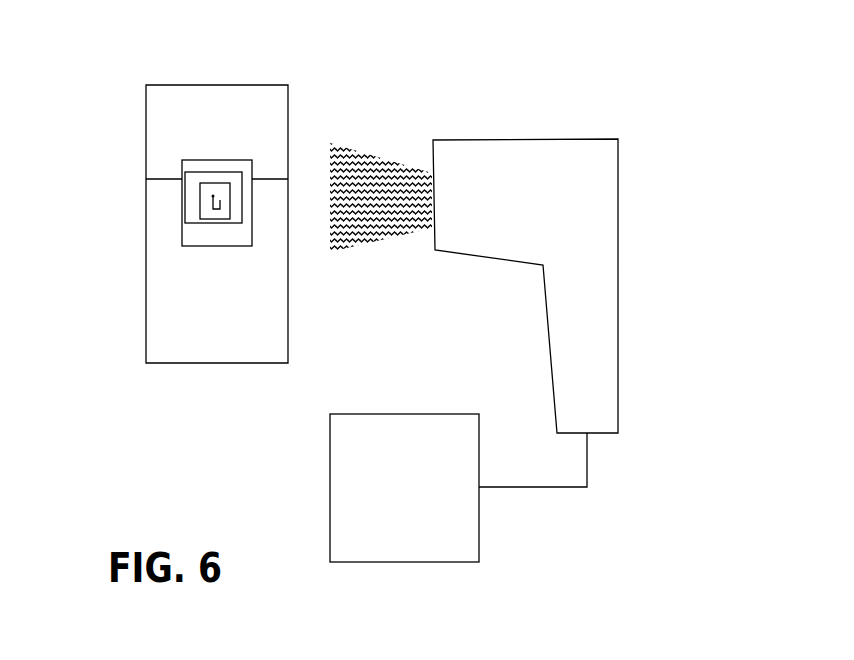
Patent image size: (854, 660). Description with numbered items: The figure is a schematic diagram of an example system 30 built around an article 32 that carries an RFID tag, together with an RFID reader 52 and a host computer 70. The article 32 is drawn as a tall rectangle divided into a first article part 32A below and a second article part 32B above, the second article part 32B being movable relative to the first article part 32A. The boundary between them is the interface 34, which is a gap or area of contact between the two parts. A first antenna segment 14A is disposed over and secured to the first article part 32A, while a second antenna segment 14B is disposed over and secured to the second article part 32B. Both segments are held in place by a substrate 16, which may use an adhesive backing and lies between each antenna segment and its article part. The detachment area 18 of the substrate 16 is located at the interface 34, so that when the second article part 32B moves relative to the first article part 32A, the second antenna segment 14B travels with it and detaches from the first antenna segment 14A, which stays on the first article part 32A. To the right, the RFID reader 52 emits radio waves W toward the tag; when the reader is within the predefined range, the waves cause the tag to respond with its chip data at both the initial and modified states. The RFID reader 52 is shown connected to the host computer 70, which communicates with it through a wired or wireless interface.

The system 30 is at (636, 43).
The article 32 is at (268, 66).
The first article part 32A is at (146, 296).
The second article part 32B is at (146, 104).
The interface 34 is at (157, 179).
The detachment area 18 is at (178, 186).
The substrate 16 is at (235, 248).
The second antenna segment 14B is at (197, 171).
The first antenna segment 14A is at (200, 203).
The radio waves W is at (363, 158).
The RFID reader 52 is at (620, 182).
The host computer 70 is at (457, 414).